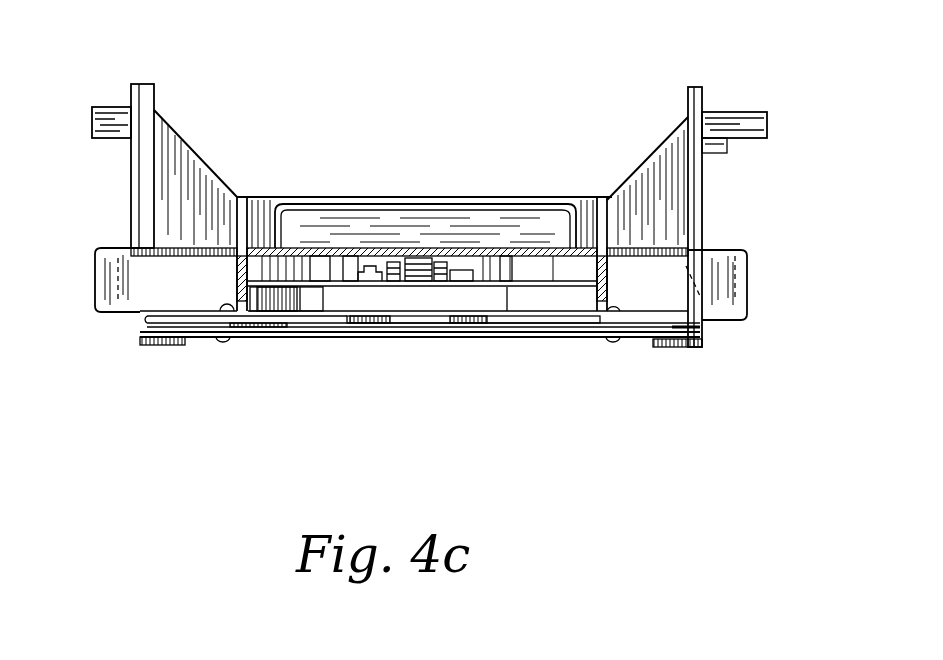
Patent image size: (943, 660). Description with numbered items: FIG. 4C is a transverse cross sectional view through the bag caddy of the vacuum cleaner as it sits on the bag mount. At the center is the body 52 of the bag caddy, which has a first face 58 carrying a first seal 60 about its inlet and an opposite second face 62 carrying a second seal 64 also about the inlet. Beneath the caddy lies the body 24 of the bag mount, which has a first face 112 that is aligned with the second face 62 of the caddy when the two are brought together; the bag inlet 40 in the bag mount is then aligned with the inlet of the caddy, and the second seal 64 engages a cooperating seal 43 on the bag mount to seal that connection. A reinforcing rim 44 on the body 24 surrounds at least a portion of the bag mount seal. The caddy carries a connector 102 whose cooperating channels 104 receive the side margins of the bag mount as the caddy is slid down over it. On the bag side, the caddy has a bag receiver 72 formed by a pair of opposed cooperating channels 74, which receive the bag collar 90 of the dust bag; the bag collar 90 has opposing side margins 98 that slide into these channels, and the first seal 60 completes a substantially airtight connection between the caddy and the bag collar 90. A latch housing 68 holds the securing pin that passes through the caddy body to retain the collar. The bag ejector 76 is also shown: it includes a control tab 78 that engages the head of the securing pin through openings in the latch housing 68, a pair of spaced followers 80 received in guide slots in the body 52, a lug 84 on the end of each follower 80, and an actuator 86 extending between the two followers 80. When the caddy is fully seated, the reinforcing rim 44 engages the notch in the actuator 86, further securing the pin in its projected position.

The body 24 is at (308, 258).
The bag inlet 40 is at (565, 300).
The cooperating seal 43 is at (318, 258).
The reinforcing rim 44 is at (268, 212).
The body 52 is at (212, 307).
The first face 58 is at (250, 327).
The first seal 60 is at (290, 327).
The second face 62 is at (748, 306).
The second seal 64 is at (578, 245).
The latch housing 68 is at (375, 270).
The bag receiver 72 is at (157, 343).
The opposed cooperating channels 74 is at (697, 327).
The bag ejector 76 is at (487, 135).
The control tab 78 is at (447, 260).
The followers 80 is at (612, 270).
The lug 84 is at (220, 340).
The actuator 86 is at (482, 198).
The bag collar 90 is at (637, 333).
The side margins 98 is at (143, 323).
The connector 102 is at (108, 247).
The cooperating channels 104 is at (147, 283).
The first face 112 is at (125, 245).